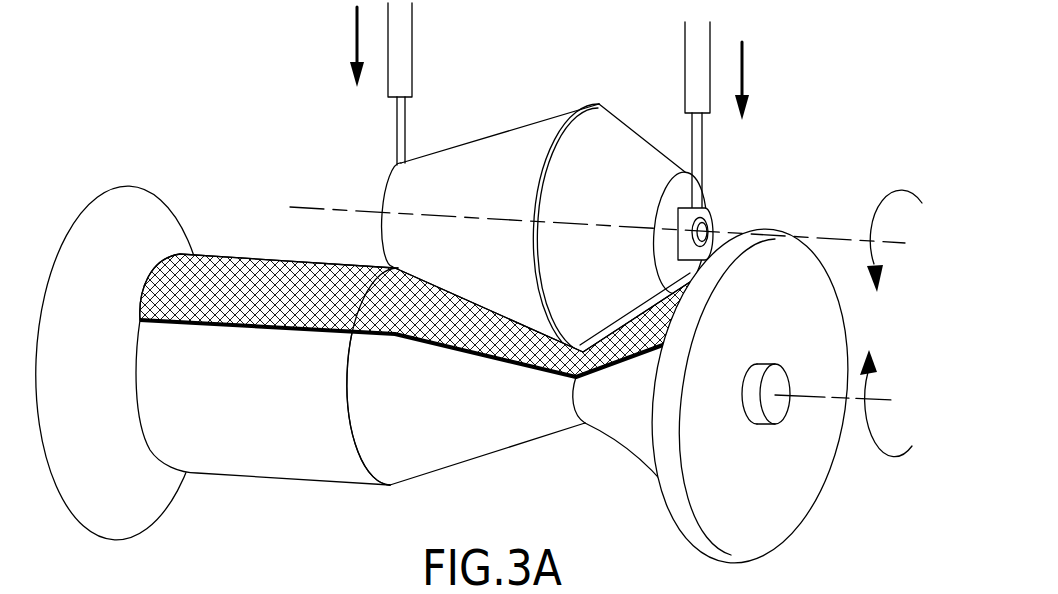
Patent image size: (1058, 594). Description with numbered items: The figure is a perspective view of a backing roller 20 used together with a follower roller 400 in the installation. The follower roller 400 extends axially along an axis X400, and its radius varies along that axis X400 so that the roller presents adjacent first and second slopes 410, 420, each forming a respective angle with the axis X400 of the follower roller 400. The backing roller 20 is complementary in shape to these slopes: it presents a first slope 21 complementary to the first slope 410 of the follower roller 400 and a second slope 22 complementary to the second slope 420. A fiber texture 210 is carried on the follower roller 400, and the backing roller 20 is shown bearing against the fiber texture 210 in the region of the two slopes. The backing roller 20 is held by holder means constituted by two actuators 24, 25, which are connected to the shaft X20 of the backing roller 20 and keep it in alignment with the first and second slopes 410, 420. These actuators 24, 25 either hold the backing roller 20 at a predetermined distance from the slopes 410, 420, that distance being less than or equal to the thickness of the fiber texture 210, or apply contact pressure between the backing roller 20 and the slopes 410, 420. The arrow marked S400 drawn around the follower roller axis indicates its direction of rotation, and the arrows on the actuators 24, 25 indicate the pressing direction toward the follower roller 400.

The backing roller 20 is at (547, 195).
The first slope 21 is at (458, 143).
The second slope 22 is at (645, 132).
The actuator 24 is at (405, 31).
The actuator 25 is at (683, 40).
The fiber texture 210 is at (258, 268).
The follower roller 400 is at (271, 492).
The first slope 410 is at (485, 448).
The second slope 420 is at (613, 443).
The shaft of the backing roller X20 is at (892, 246).
The axis of the follower roller X400 is at (890, 397).
The rotation direction of mandrel S400 is at (872, 462).